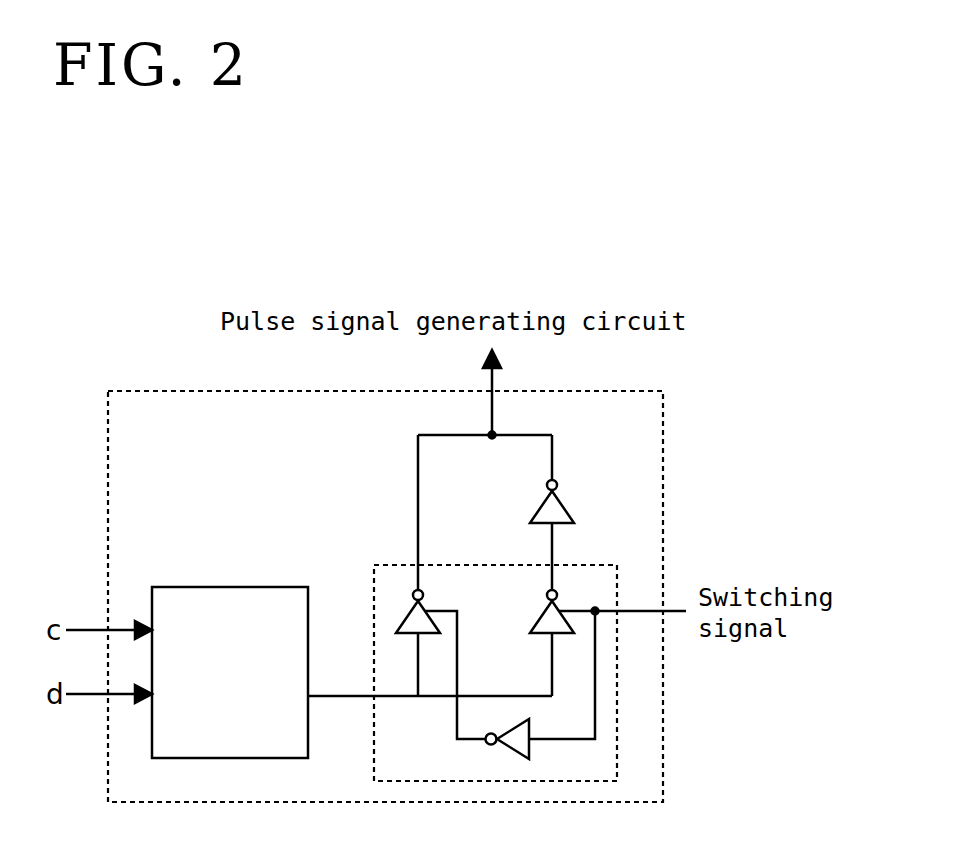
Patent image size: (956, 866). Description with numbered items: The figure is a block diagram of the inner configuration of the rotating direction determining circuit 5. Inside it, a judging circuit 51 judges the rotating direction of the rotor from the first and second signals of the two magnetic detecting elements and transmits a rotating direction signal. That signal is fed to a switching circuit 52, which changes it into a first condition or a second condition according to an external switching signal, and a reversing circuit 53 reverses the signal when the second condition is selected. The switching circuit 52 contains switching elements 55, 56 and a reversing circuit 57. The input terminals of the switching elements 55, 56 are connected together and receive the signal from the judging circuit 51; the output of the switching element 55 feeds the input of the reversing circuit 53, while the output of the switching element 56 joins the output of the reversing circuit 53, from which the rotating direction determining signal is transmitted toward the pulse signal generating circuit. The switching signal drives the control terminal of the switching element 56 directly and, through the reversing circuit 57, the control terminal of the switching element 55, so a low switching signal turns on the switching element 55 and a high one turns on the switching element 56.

The rotating direction determining circuit 5 is at (263, 391).
The judging circuit 51 is at (220, 587).
The switching circuit 52 is at (570, 565).
The reversing circuit 53 is at (563, 500).
The switching element 55 is at (559, 610).
The switching element 56 is at (425, 610).
The reversing circuit 57 is at (529, 737).